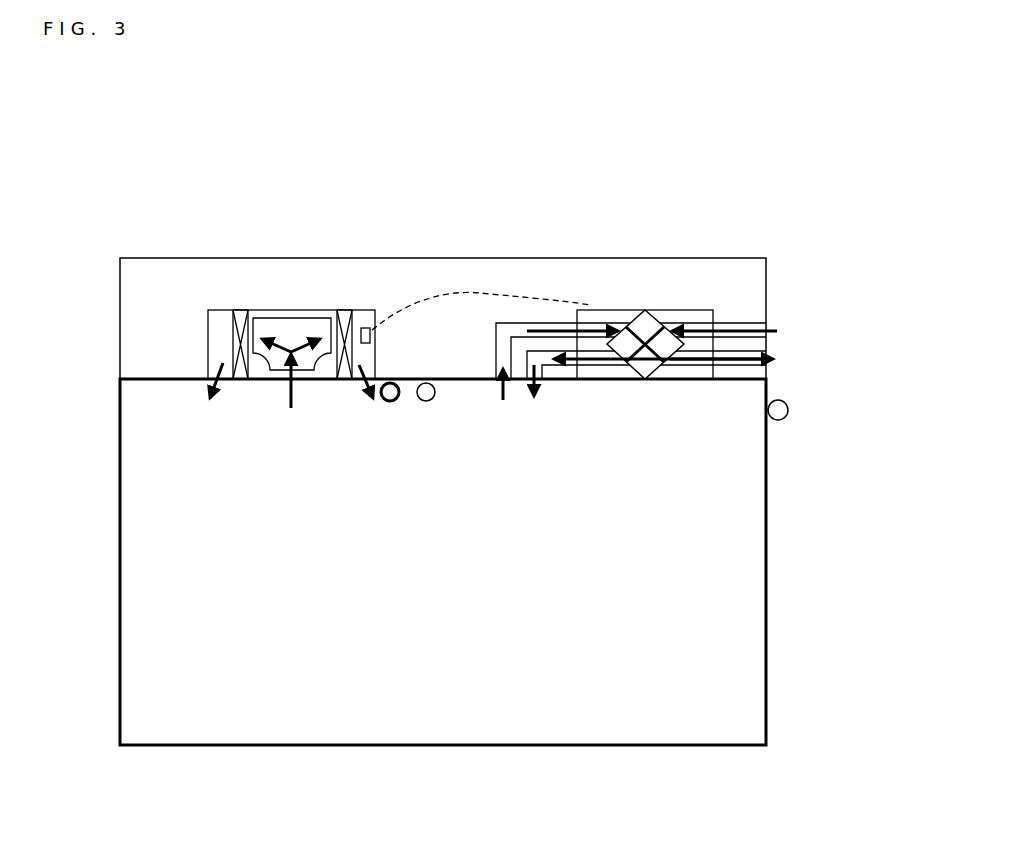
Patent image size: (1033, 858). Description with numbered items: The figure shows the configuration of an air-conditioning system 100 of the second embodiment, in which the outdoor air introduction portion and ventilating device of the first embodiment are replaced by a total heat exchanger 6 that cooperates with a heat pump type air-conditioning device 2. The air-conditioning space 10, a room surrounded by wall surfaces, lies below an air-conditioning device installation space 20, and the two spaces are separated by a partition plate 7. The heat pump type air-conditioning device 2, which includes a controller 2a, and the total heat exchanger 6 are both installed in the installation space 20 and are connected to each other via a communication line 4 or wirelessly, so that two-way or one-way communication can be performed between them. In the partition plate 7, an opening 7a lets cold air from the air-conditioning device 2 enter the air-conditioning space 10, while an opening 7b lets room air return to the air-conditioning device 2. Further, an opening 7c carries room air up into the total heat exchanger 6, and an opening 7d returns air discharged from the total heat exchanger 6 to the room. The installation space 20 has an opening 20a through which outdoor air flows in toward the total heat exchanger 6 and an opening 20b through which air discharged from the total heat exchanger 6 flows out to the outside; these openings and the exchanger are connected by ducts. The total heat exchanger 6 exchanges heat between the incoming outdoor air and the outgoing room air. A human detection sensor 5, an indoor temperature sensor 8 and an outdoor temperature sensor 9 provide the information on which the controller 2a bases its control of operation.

The air-conditioning system 100 is at (694, 238).
The air-conditioning device installation space 20 is at (150, 257).
The opening 20a is at (773, 320).
The opening 20b is at (772, 360).
The air-conditioning space 10 is at (186, 752).
The heat pump type air-conditioning device 2 is at (295, 310).
The controller 2a is at (370, 330).
The communication line 4 is at (477, 293).
The human detection sensor 5 is at (387, 402).
The total heat exchanger 6 is at (633, 373).
The partition plate 7 is at (132, 382).
The opening 7a is at (215, 365).
The opening 7b is at (287, 382).
The opening 7c is at (502, 392).
The opening 7d is at (532, 393).
The indoor temperature sensor 8 is at (423, 405).
The outdoor temperature sensor 9 is at (778, 422).